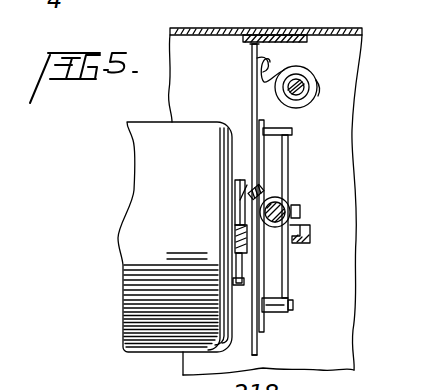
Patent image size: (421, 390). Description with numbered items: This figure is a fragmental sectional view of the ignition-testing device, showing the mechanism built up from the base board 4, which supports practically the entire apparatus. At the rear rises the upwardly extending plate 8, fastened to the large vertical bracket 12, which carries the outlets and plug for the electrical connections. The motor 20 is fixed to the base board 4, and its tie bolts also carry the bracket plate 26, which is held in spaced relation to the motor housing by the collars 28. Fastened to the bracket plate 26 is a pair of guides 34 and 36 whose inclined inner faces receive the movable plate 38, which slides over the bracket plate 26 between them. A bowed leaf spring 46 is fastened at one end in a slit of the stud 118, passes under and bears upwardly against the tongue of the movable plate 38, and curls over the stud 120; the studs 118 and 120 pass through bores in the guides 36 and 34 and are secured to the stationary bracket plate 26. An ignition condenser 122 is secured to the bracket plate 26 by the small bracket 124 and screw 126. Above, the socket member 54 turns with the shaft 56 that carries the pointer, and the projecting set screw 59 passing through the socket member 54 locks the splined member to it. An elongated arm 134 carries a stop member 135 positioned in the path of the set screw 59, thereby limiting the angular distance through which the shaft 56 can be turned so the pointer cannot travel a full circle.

The base board 4 is at (343, 108).
The upwardly extending plate 8 is at (330, 28).
The vertical bracket 12 is at (273, 28).
The motor 20 is at (125, 248).
The bracket plate 26 is at (258, 330).
The collars 28 is at (235, 225).
The guide 34 is at (272, 316).
The guide 36 is at (255, 122).
The movable plate 38 is at (263, 274).
The leaf spring 46 is at (247, 258).
The socket member 54 is at (276, 203).
The shaft 56 is at (292, 213).
The set screw 59 is at (263, 186).
The stud 118 is at (288, 134).
The stud 120 is at (213, 336).
The ignition condenser 122 is at (318, 78).
The small bracket 124 is at (296, 69).
The screw 126 is at (263, 67).
The elongated arm 134 is at (248, 291).
The stop member 135 is at (240, 203).